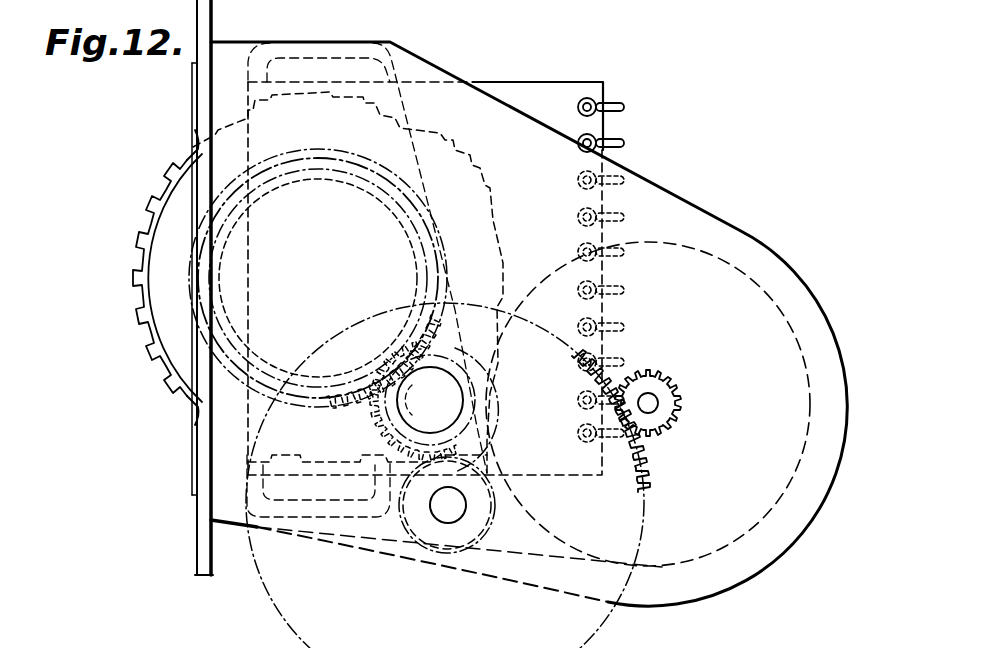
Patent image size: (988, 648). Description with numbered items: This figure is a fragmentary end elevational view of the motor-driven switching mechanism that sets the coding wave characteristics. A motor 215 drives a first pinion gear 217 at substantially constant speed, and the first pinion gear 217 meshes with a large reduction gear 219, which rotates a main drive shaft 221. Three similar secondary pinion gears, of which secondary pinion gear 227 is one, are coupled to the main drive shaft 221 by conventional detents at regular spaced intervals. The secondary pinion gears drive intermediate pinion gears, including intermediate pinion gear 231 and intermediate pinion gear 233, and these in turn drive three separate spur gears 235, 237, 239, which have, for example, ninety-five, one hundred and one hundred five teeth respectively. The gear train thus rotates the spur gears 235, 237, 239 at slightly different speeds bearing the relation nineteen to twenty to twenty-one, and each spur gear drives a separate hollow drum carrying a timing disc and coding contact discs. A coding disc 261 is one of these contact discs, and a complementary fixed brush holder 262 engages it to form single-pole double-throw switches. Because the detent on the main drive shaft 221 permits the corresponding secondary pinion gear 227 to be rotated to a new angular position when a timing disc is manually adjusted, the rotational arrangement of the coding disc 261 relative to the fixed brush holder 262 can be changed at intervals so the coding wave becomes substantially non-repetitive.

The motor 215 is at (712, 247).
The first pinion gear 217 is at (681, 400).
The large reduction gear 219 is at (650, 482).
The main drive shaft 221 is at (460, 513).
The secondary pinion gear 227 is at (475, 547).
The intermediate pinion gear 231 is at (417, 425).
The intermediate pinion gear 233 is at (497, 412).
The spur gear 235 is at (257, 363).
The spur gear 237 is at (230, 352).
The spur gear 239 is at (440, 342).
The coding disc 261 is at (440, 133).
The fixed brush holder 262 is at (570, 66).